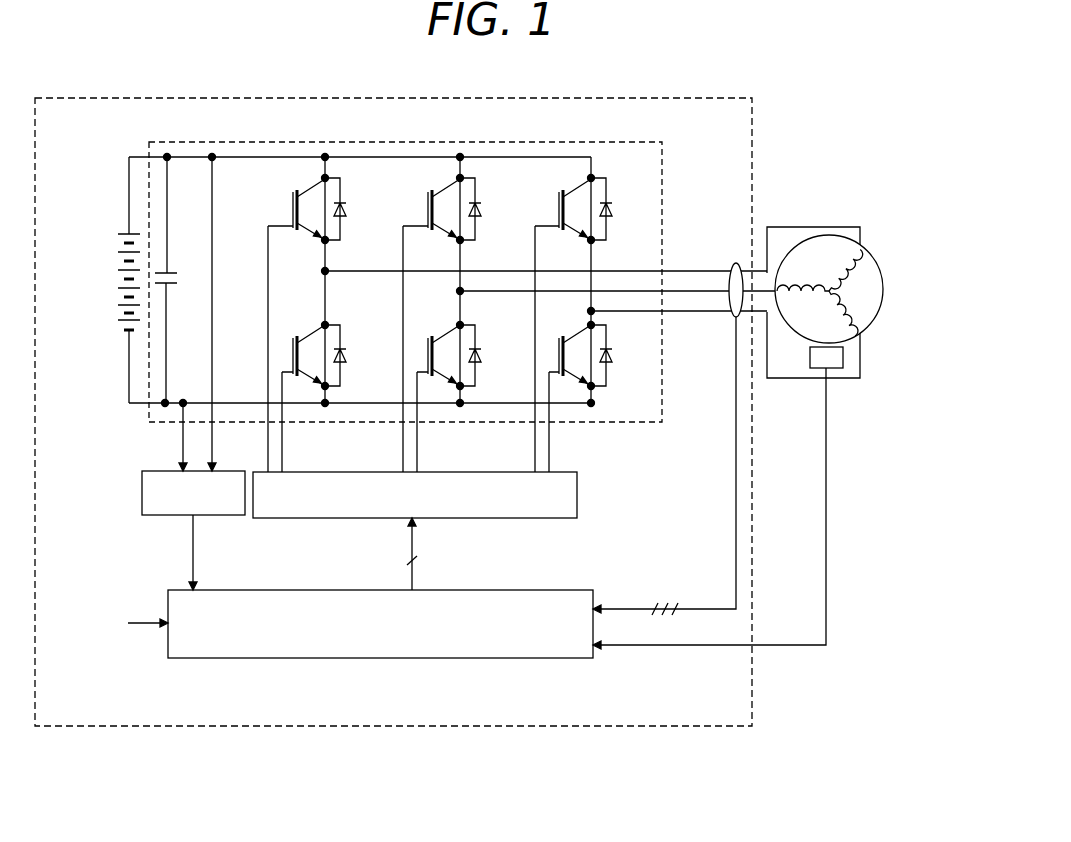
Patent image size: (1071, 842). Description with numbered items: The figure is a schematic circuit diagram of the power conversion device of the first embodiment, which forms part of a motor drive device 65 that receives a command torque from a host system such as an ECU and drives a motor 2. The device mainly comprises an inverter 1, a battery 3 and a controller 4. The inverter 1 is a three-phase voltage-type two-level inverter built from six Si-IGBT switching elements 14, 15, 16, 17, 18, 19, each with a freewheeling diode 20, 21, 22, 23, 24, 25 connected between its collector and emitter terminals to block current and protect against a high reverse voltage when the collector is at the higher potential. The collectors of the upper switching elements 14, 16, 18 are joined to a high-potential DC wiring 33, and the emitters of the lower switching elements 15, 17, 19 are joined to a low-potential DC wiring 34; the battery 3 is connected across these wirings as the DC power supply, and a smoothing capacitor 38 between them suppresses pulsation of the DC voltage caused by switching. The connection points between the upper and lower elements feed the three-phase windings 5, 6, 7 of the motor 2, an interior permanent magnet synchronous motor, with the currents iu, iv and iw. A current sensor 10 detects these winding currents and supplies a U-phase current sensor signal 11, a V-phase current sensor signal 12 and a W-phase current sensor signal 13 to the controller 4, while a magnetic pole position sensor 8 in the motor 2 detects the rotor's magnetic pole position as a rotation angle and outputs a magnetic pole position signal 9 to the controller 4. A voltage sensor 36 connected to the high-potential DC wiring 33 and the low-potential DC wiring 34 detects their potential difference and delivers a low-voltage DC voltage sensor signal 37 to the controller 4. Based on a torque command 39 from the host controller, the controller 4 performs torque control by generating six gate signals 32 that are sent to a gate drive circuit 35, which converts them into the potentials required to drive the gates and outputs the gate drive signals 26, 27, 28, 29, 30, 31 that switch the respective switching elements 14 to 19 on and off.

The motor drive device 65 is at (560, 98).
The inverter 1 is at (662, 193).
The motor 2 is at (823, 243).
The battery 3 is at (117, 284).
The controller 4 is at (168, 595).
The winding 5 is at (860, 253).
The winding 6 is at (813, 278).
The winding 7 is at (847, 362).
The magnetic pole position sensor 8 is at (853, 337).
The magnetic pole position signal 9 is at (800, 622).
The current sensor 10 is at (733, 266).
The U-phase current sensor signal 11 is at (615, 575).
The V-phase current sensor signal 12 is at (643, 577).
The W-phase current sensor signal 13 is at (672, 578).
The switching element 14 is at (292, 217).
The switching element 15 is at (312, 332).
The switching element 16 is at (427, 217).
The switching element 17 is at (447, 334).
The switching element 18 is at (560, 217).
The switching element 19 is at (582, 337).
The freewheeling diode 20 is at (345, 212).
The freewheeling diode 21 is at (347, 358).
The freewheeling diode 22 is at (482, 212).
The freewheeling diode 23 is at (482, 358).
The freewheeling diode 24 is at (613, 212).
The freewheeling diode 25 is at (613, 358).
The gate drive signal 26 is at (266, 468).
The gate drive signal 27 is at (284, 470).
The gate drive signal 28 is at (403, 470).
The gate drive signal 29 is at (418, 470).
The gate drive signal 30 is at (534, 470).
The gate drive signal 31 is at (549, 470).
The gate signal 32 is at (412, 580).
The high-potential DC wiring 33 is at (180, 152).
The low-potential DC wiring 34 is at (142, 403).
The gate drive circuit 35 is at (577, 490).
The voltage sensor 36 is at (142, 478).
The DC voltage sensor signal 37 is at (193, 572).
The smoothing capacitor 38 is at (172, 286).
The torque command 39 is at (115, 650).